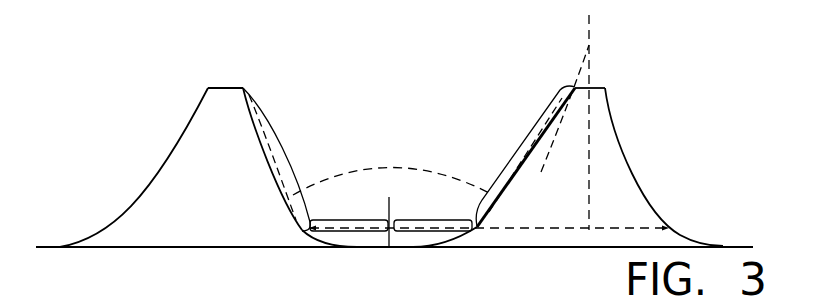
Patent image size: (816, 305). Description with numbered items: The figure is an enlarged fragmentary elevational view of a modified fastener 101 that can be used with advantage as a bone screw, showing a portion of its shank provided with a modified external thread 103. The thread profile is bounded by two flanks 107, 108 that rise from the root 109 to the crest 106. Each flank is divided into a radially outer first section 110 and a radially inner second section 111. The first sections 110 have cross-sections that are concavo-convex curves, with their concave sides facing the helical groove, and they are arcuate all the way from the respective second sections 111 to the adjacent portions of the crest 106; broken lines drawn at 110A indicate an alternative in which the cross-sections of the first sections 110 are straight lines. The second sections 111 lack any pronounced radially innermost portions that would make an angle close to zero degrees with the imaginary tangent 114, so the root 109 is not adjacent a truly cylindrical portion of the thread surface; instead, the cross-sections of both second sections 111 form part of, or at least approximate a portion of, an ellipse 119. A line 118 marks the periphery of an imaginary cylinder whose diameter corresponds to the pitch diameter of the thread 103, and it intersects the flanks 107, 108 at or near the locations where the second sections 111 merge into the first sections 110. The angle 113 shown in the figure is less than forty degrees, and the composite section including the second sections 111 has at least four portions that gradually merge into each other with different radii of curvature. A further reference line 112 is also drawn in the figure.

The modified fastener 101 is at (158, 168).
The modified external thread 103 is at (753, 155).
The crest 106 is at (213, 80).
The flank 107 is at (247, 148).
The flank 108 is at (522, 188).
The root 109 is at (386, 200).
The first sections 110 is at (287, 158).
The straight-line first sections 110A is at (262, 115).
The second sections 111 is at (350, 220).
The reference axis 112 is at (589, 48).
The angle 113 is at (580, 90).
The imaginary tangent 114 is at (243, 252).
The pitch diameter line 118 is at (580, 226).
The ellipse 119 is at (399, 166).